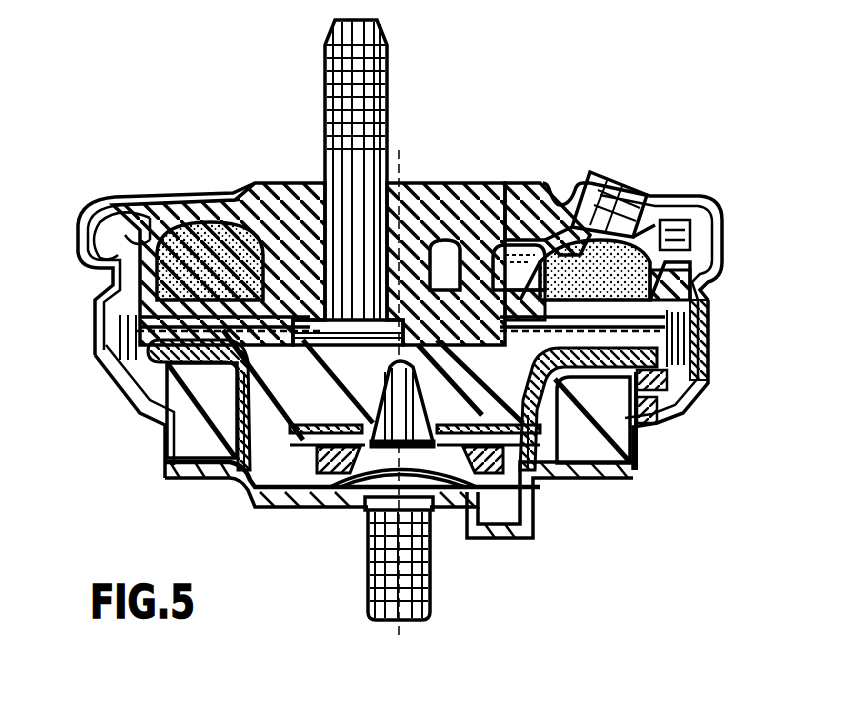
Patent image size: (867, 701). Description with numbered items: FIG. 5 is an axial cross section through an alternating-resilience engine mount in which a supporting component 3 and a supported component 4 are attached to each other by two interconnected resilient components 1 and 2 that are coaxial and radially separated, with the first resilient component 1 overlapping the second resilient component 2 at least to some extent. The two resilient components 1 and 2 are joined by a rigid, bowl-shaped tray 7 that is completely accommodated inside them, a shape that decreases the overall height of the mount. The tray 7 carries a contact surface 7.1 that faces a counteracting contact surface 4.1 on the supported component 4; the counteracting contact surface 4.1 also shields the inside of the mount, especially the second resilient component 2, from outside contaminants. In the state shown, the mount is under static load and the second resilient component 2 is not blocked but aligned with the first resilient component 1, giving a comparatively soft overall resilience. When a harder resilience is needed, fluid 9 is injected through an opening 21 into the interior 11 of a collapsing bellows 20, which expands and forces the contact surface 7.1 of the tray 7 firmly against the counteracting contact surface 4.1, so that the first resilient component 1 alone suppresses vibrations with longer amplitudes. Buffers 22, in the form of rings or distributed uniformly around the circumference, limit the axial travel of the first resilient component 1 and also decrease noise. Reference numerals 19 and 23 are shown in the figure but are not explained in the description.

The resilient component 1 is at (180, 440).
The resilient component 2 is at (325, 397).
The supporting component 3 is at (325, 505).
The supported component 4 is at (462, 192).
The counteracting contact surface 4.1 is at (672, 408).
The tray 7 is at (697, 390).
The contact surface 7.1 is at (137, 395).
The fluid 9 is at (590, 235).
The interior 11 is at (540, 255).
The left shell ear 19 is at (125, 338).
The collapsing bellows 20 is at (693, 282).
The opening 21 is at (628, 188).
The buffers 22 is at (403, 162).
The bottom bracket 23 is at (548, 492).